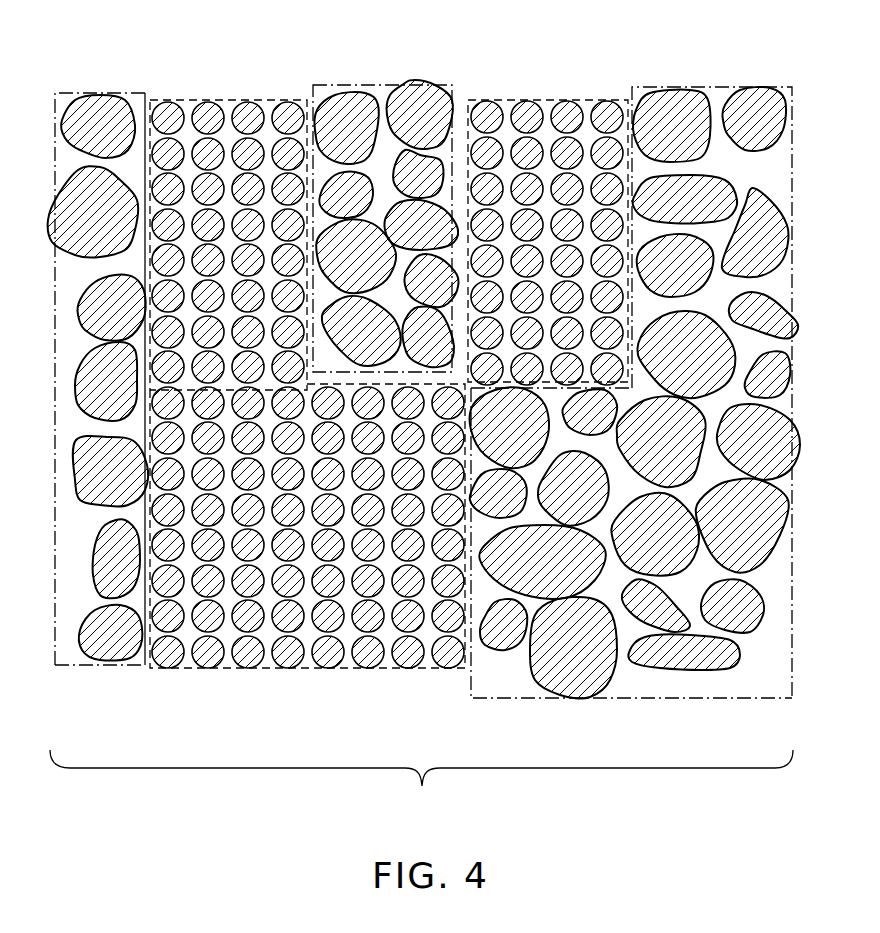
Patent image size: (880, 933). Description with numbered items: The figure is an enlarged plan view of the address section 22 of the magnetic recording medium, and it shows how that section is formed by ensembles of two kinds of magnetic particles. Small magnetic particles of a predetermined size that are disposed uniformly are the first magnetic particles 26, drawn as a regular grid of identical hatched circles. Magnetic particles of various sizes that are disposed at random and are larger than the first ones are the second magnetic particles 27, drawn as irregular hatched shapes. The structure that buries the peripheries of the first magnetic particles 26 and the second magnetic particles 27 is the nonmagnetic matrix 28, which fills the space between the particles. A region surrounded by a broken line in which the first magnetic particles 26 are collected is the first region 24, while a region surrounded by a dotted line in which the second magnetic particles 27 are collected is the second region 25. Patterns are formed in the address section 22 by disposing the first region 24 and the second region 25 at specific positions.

The address section 22 is at (421, 783).
The first region 24 is at (232, 100).
The second region 25 is at (107, 92).
The first magnetic particles 26 is at (205, 666).
The second magnetic particles 27 is at (566, 690).
The nonmagnetic matrix 28 is at (268, 633).